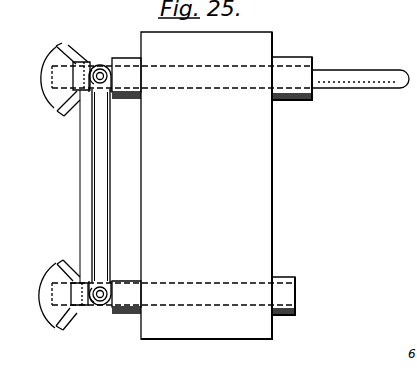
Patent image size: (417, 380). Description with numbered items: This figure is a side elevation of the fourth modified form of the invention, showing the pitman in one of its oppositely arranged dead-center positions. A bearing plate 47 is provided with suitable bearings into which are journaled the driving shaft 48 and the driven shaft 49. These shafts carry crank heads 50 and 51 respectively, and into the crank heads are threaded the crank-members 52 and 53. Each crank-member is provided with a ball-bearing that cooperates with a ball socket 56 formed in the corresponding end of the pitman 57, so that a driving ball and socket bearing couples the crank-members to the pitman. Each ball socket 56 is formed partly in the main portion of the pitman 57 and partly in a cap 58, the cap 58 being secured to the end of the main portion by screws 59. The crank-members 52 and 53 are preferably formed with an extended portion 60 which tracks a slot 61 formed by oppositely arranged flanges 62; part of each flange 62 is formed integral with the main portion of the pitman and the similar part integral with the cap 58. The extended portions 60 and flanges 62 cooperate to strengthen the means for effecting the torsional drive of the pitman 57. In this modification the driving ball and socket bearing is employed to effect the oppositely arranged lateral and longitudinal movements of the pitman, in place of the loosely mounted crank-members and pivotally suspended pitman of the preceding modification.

The bearing plate 47 is at (206, 185).
The driving shaft 48 is at (195, 68).
The driven shaft 49 is at (203, 281).
The crank head 50 is at (126, 78).
The crank head 51 is at (126, 297).
The crank-member 52 is at (107, 67).
The crank-member 53 is at (112, 282).
The ball socket 56 is at (106, 96).
The pitman 57 is at (80, 173).
The cap 58 is at (91, 63).
The screw 59 is at (56, 50).
The extended portion 60 is at (49, 273).
The slot 61 is at (81, 54).
The flange 62 is at (78, 107).